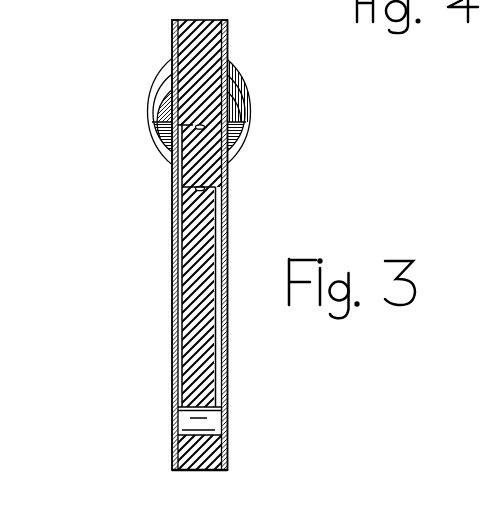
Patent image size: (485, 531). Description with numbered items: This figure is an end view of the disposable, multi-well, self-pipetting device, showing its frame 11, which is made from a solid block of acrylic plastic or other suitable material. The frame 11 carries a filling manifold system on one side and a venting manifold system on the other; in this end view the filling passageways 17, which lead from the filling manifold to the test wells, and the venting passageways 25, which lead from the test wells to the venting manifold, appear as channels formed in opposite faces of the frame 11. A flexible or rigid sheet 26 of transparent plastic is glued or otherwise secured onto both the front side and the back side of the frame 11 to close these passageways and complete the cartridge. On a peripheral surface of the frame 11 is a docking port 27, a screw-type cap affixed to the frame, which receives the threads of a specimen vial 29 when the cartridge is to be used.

The frame 11 is at (140, 303).
The filling passageways 17 is at (217, 228).
The venting passageways 25 is at (180, 248).
The sheet 26 is at (172, 33).
The docking port 27 is at (158, 153).
The specimen vial 29 is at (162, 71).